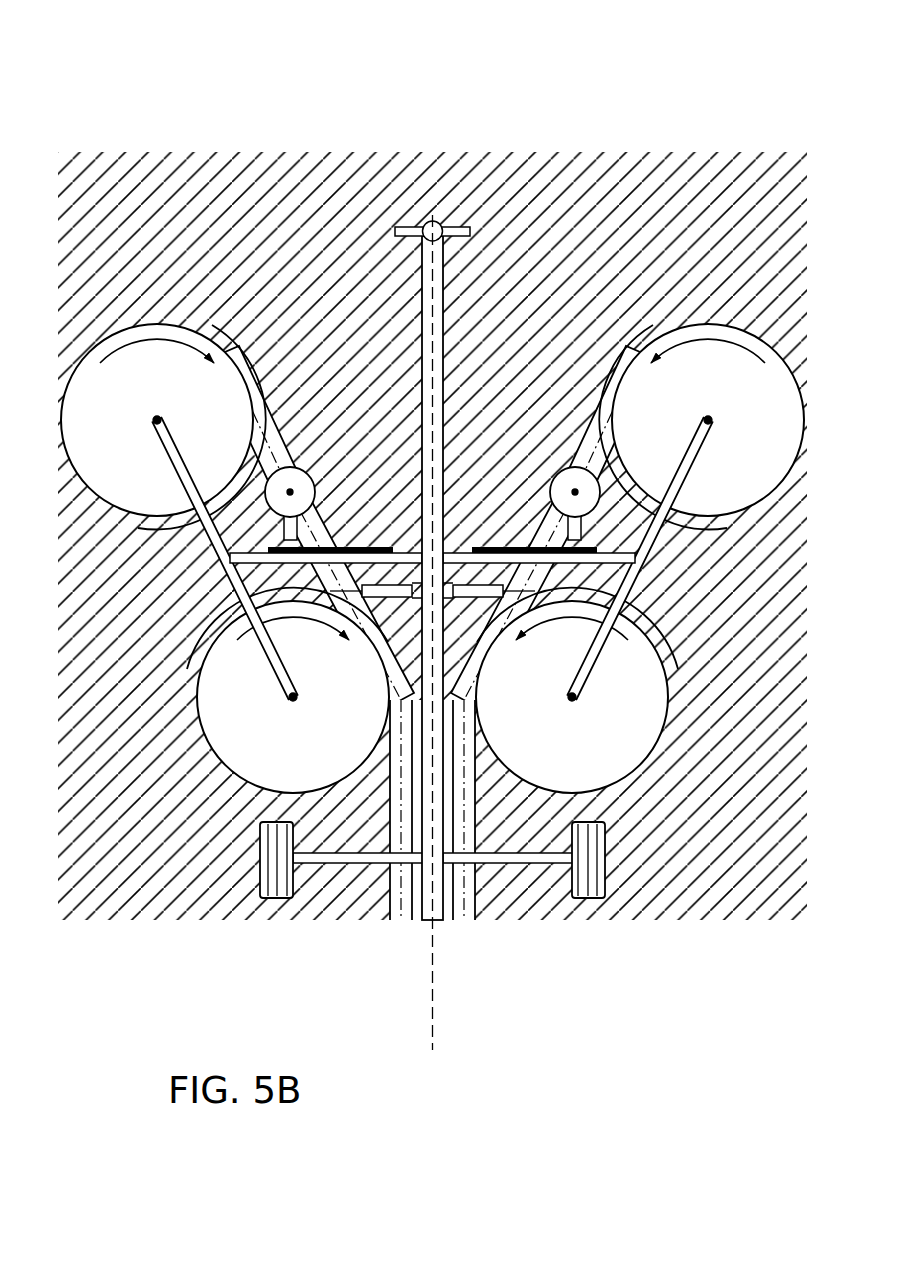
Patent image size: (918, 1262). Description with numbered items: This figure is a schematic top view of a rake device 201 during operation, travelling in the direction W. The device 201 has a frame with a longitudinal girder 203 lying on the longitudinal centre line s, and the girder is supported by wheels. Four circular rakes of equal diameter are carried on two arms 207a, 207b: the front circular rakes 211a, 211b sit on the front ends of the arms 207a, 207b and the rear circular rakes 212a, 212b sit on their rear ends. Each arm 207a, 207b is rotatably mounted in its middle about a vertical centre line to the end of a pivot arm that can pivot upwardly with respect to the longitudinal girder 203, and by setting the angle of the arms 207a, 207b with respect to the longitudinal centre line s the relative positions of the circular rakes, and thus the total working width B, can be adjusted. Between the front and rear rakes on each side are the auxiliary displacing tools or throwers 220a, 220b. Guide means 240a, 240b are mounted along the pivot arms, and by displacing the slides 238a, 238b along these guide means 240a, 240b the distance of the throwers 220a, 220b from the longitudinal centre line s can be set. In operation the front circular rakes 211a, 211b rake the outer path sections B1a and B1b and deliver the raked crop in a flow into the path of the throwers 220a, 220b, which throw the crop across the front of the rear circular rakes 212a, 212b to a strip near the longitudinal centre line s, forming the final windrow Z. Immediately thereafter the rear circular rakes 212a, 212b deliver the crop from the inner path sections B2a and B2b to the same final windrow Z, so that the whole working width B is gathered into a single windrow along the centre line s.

The rake device 201 is at (200, 580).
The longitudinal girder 203 is at (432, 410).
The arm 207a is at (186, 690).
The arm 207b is at (679, 690).
The front circular rake 211a is at (163, 426).
The front circular rake 211b is at (701, 426).
The rear circular rake 212a is at (288, 690).
The rear circular rake 212b is at (577, 690).
The thrower 220a is at (316, 476).
The thrower 220b is at (549, 476).
The slide 238a is at (232, 556).
The slide 238b is at (637, 556).
The guide means 240a is at (326, 505).
The guide means 240b is at (540, 505).
The working width B is at (807, 152).
The path section B1a is at (252, 152).
The path section B1b is at (807, 94).
The path section B2a is at (391, 152).
The path section B2b is at (668, 152).
The direction of travel W is at (540, 226).
The final windrow Z is at (453, 888).
The longitudinal centre line s is at (432, 1050).